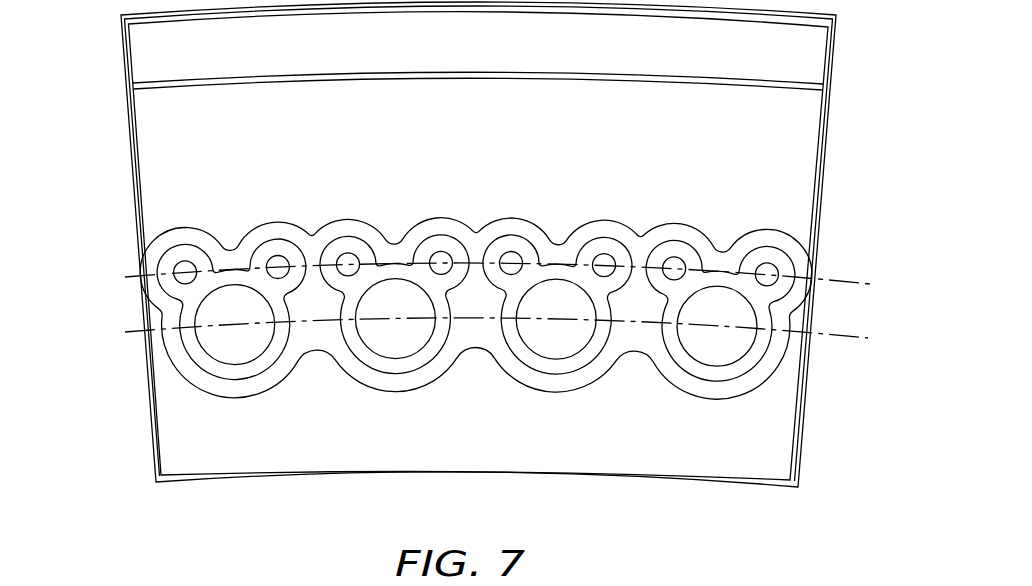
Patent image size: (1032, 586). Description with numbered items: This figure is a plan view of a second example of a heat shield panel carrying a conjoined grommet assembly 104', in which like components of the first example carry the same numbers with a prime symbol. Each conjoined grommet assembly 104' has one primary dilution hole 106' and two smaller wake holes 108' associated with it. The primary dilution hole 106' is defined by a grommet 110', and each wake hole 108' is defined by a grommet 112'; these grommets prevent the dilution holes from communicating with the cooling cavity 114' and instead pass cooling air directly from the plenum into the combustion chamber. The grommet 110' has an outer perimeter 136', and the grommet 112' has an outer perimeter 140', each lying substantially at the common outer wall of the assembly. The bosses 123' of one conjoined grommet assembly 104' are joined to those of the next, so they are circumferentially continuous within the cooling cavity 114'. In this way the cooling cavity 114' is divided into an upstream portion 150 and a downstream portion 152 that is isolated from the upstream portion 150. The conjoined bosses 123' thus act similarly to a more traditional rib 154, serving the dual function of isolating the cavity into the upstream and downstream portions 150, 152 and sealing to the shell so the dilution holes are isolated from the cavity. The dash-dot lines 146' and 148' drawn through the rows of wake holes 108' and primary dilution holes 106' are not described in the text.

The conjoined grommet assembly 104' is at (430, 244).
The primary dilution hole 106' is at (703, 367).
The wake hole 108' is at (558, 223).
The grommet 110' is at (413, 352).
The grommet 112' is at (450, 216).
The cooling cavity 114' is at (712, 136).
The bosses 123' is at (476, 298).
The outer perimeter 136' is at (403, 214).
The outer perimeter 140' is at (347, 218).
The upper centerline of small holes 146' is at (512, 235).
The lower centerline of large holes 148' is at (502, 378).
The upstream portion 150 is at (248, 166).
The downstream portion 152 is at (278, 447).
The rib 154 is at (608, 74).